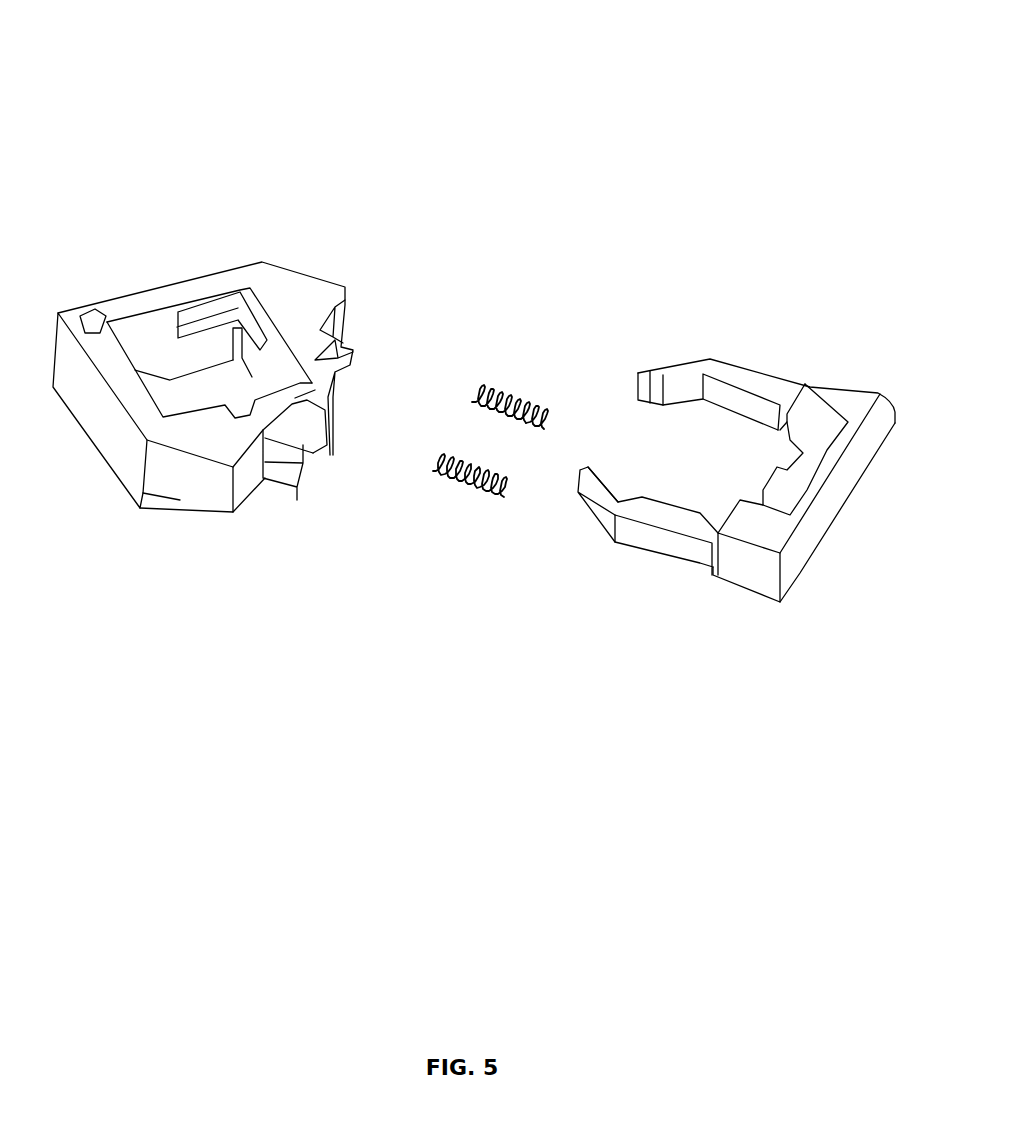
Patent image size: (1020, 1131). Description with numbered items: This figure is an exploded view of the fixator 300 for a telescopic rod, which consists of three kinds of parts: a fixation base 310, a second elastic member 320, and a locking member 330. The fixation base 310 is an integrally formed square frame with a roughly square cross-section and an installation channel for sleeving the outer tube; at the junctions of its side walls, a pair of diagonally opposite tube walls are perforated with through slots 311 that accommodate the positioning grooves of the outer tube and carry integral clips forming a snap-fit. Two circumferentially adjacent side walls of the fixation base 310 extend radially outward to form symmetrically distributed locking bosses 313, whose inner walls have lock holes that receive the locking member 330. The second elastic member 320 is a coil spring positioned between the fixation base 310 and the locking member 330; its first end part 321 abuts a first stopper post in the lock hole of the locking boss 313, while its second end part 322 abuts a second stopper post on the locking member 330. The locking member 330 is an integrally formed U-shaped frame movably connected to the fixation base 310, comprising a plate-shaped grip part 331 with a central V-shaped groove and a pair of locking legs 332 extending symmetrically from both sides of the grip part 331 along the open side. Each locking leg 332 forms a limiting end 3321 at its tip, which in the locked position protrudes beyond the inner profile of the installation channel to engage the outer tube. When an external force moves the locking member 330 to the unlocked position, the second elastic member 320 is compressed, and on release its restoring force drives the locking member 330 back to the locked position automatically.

The fixator 300 is at (651, 113).
The fixation base 310 is at (182, 291).
The through slot 311 is at (93, 322).
The locking boss 313 is at (325, 292).
The second elastic member 320 is at (517, 387).
The first end part 321 is at (470, 390).
The second end part 322 is at (557, 410).
The locking member 330 is at (843, 390).
The grip part 331 is at (852, 497).
The locking leg 332 is at (678, 527).
The limiting end 3321 is at (595, 493).